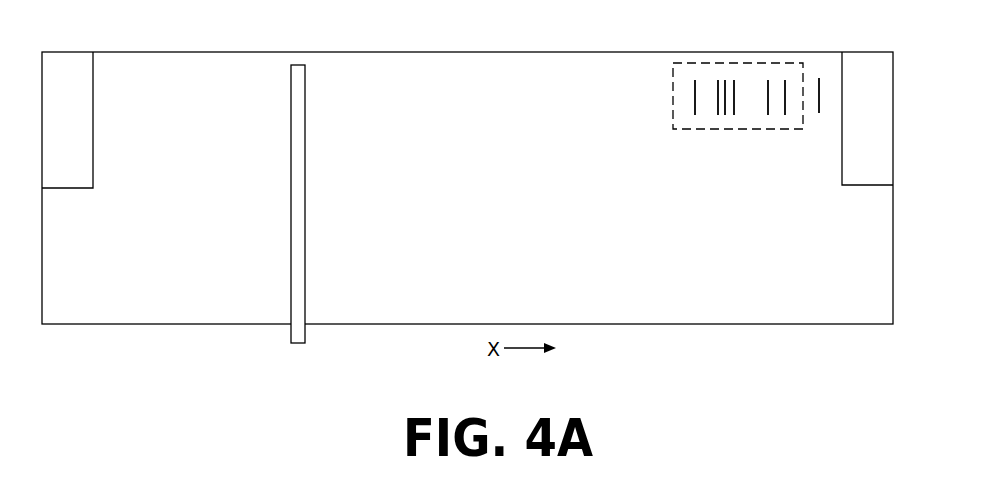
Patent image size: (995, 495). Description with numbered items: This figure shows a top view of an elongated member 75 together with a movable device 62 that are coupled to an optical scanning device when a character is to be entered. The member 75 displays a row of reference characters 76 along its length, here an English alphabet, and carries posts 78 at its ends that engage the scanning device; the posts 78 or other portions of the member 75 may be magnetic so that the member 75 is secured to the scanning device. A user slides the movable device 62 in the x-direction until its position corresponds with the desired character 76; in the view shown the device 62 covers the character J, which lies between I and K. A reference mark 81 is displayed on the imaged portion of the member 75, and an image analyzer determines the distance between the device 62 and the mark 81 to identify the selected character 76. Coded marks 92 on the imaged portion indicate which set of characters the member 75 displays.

The elongated member 75 is at (461, 52).
The posts 78 is at (93, 163).
The movable device 62 is at (305, 157).
The coded marks 92 is at (715, 63).
The reference mark 81 is at (821, 56).
The reference characters 76 is at (92, 307).